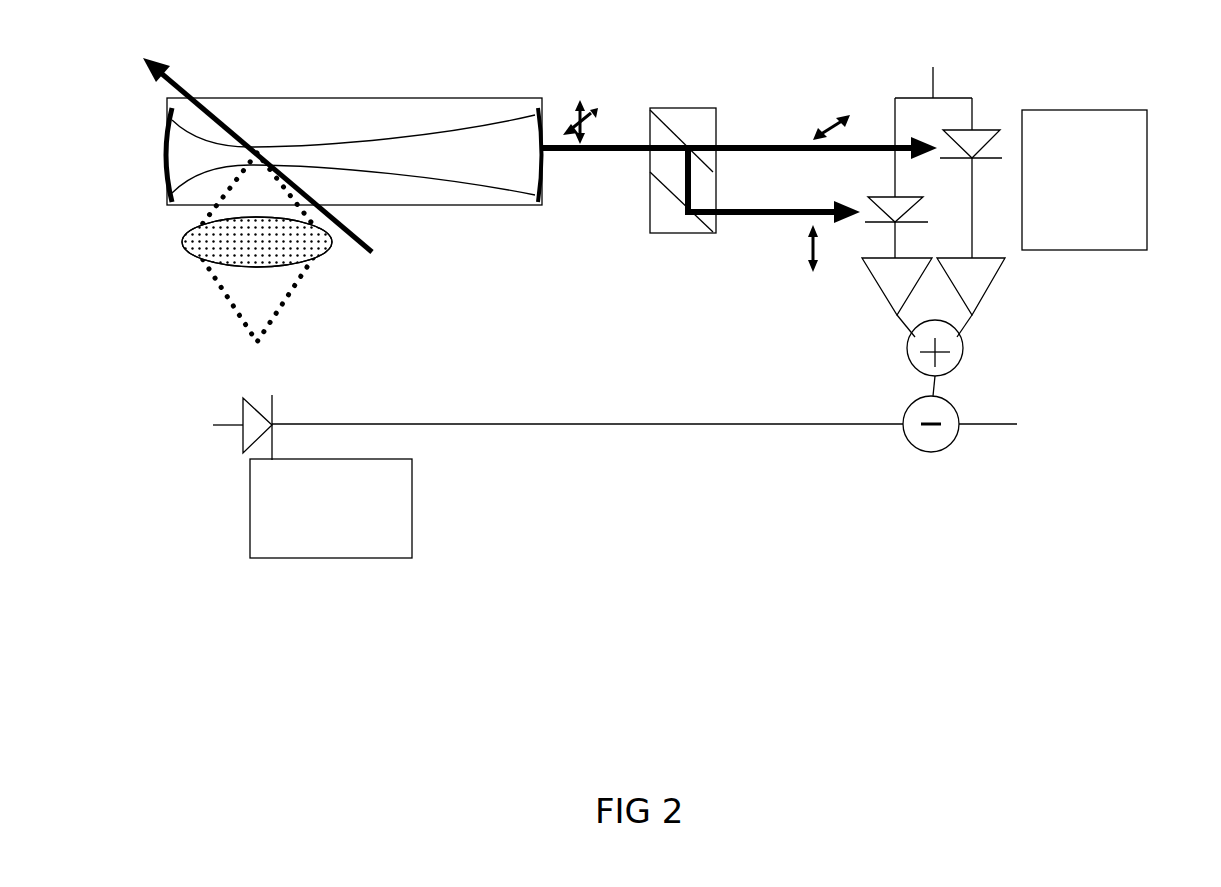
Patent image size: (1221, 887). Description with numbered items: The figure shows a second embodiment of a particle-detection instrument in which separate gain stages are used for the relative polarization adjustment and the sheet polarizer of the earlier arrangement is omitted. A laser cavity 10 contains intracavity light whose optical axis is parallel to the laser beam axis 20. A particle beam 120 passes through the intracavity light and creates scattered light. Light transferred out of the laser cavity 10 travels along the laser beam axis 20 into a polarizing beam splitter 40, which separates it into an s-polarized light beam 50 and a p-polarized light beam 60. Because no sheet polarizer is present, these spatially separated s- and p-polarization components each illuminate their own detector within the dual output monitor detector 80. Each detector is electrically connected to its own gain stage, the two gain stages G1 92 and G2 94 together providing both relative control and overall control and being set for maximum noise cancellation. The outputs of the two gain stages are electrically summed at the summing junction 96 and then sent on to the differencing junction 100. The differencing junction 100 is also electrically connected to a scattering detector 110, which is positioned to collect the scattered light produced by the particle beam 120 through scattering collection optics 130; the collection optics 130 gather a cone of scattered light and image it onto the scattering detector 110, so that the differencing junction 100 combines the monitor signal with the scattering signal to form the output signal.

The laser cavity 10 is at (450, 30).
The laser beam axis 20 is at (612, 153).
The polarizing beam splitter 40 is at (673, 108).
The s-polarized light beam 50 is at (737, 143).
The p-polarized light beam 60 is at (758, 212).
The dual output monitor detector 80 is at (1147, 170).
The gain stage G1 92 is at (877, 275).
The gain stage G2 94 is at (985, 295).
The summing junction 96 is at (923, 377).
The differencing junction 100 is at (903, 437).
The scattering detector 110 is at (412, 497).
The particle beam 120 is at (185, 96).
The scattering collection optics 130 is at (290, 237).